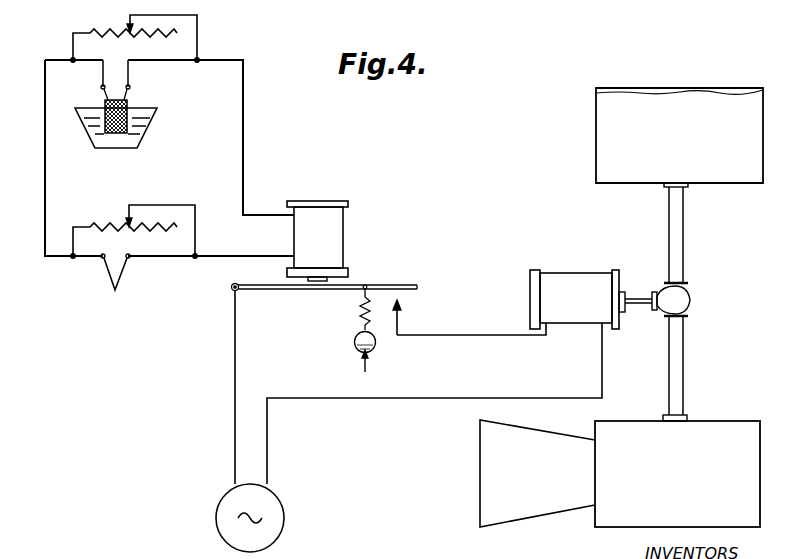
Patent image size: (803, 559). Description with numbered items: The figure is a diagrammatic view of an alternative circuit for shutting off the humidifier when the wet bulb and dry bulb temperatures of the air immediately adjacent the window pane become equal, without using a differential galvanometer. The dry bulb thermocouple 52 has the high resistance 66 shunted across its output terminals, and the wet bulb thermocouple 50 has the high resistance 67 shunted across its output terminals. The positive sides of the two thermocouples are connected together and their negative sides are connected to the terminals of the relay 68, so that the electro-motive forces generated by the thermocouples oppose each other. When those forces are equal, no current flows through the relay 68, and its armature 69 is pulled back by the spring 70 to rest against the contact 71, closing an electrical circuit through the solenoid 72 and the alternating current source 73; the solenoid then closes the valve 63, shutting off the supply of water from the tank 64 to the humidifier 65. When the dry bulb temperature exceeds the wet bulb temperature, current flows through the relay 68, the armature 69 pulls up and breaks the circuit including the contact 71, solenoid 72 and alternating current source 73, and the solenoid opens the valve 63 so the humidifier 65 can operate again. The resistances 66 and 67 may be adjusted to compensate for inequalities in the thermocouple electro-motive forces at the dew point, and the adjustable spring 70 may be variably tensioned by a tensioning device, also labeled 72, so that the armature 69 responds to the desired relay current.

The wet bulb thermocouple 50 is at (129, 98).
The dry bulb thermocouple 52 is at (120, 281).
The valve 63 is at (690, 298).
The tank 64 is at (598, 126).
The humidifier 65 is at (705, 426).
The high resistance 66 is at (105, 222).
The high resistance 67 is at (100, 28).
The relay 68 is at (343, 229).
The armature 69 is at (302, 292).
The spring 70 is at (360, 321).
The contact 71 is at (402, 315).
The solenoid 72 is at (372, 349).
The alternating current source 73 is at (280, 500).